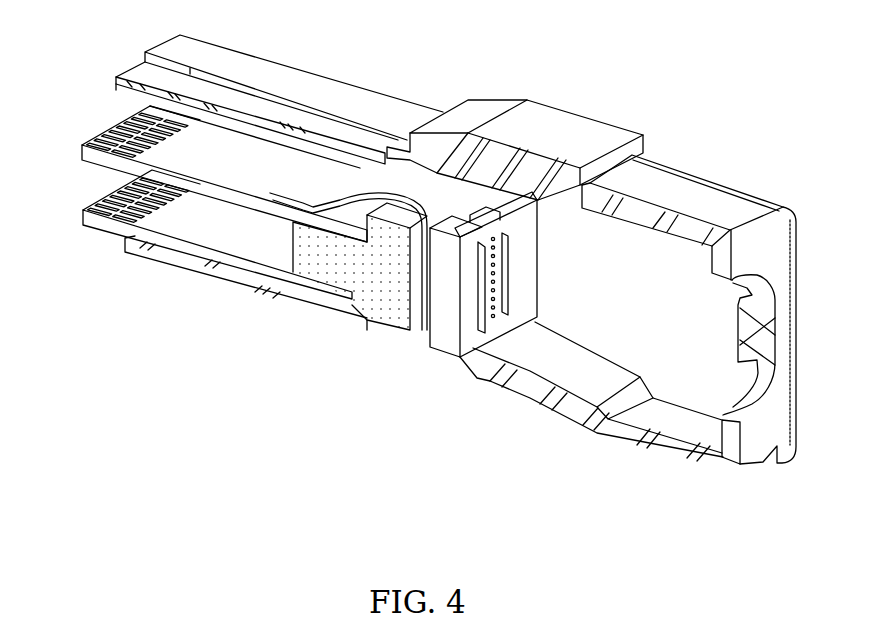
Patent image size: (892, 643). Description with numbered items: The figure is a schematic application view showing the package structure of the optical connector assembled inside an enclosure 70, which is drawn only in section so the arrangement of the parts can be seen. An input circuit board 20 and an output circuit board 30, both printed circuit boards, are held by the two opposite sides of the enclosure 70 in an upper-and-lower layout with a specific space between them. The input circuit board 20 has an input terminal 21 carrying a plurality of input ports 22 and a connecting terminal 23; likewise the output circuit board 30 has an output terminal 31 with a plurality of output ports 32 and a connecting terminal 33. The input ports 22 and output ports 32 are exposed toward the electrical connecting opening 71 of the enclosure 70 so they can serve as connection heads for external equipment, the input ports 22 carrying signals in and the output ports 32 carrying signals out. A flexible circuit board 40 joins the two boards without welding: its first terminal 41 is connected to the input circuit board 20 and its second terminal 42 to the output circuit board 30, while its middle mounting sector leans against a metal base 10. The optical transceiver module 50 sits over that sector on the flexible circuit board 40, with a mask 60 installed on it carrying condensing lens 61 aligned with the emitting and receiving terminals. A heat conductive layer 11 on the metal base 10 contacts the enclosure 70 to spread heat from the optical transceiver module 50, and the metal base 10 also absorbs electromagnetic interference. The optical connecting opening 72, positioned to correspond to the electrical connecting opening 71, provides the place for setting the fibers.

The metal base 10 is at (365, 296).
The heat conductive layer 11 is at (340, 273).
The input circuit board 20 is at (207, 140).
The input terminal 21 is at (82, 147).
The input ports 22 is at (118, 123).
The connecting terminal 23 is at (267, 193).
The output circuit board 30 is at (182, 248).
The output terminal 31 is at (83, 217).
The output ports 32 is at (110, 218).
The connecting terminal 33 is at (263, 293).
The flexible circuit board 40 is at (370, 180).
The first terminal 41 is at (330, 177).
The second terminal 42 is at (277, 294).
The optical transceiver module 50 is at (538, 280).
The mask 60 is at (495, 333).
The condensing lens 61 is at (494, 252).
The enclosure 70 is at (713, 182).
The electrical connecting opening 71 is at (112, 95).
The optical connecting opening 72 is at (767, 400).